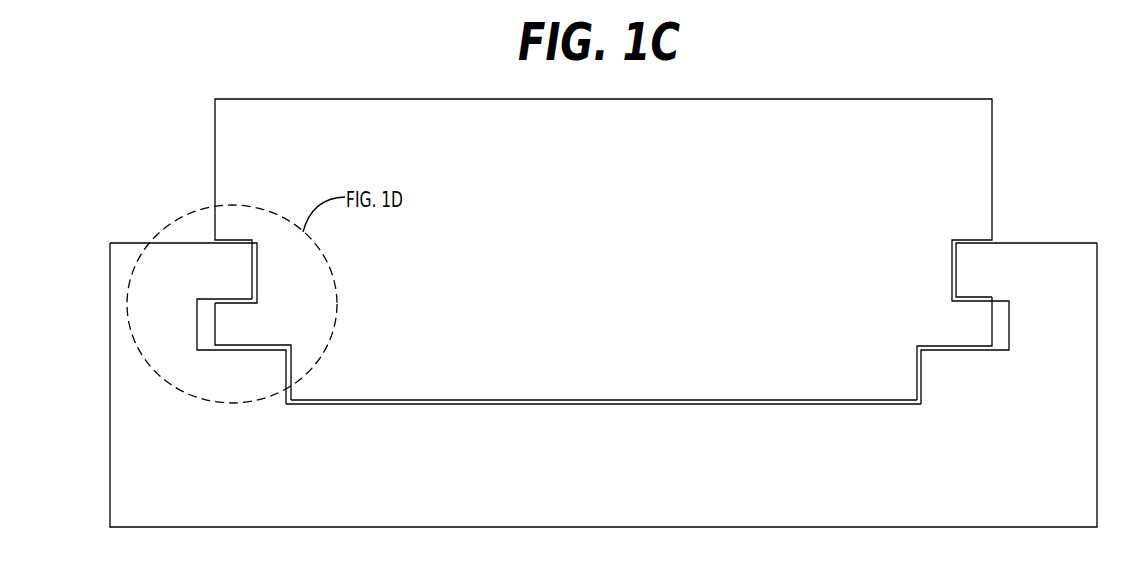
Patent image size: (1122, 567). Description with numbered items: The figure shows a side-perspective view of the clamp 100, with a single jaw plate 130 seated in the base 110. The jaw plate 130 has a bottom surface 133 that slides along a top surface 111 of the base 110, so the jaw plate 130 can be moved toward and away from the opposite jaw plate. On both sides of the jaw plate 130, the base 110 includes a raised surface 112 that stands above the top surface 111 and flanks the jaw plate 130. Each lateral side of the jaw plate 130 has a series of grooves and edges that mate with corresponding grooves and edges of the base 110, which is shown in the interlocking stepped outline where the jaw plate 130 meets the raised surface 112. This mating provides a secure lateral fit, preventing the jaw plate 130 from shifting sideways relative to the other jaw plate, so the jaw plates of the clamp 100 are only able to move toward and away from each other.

The clamp 100 is at (113, 157).
The base 110 is at (618, 474).
The top surface 111 is at (660, 404).
The raised surface 112 is at (125, 243).
The jaw plate 130 is at (618, 199).
The bottom surface 133 is at (578, 400).